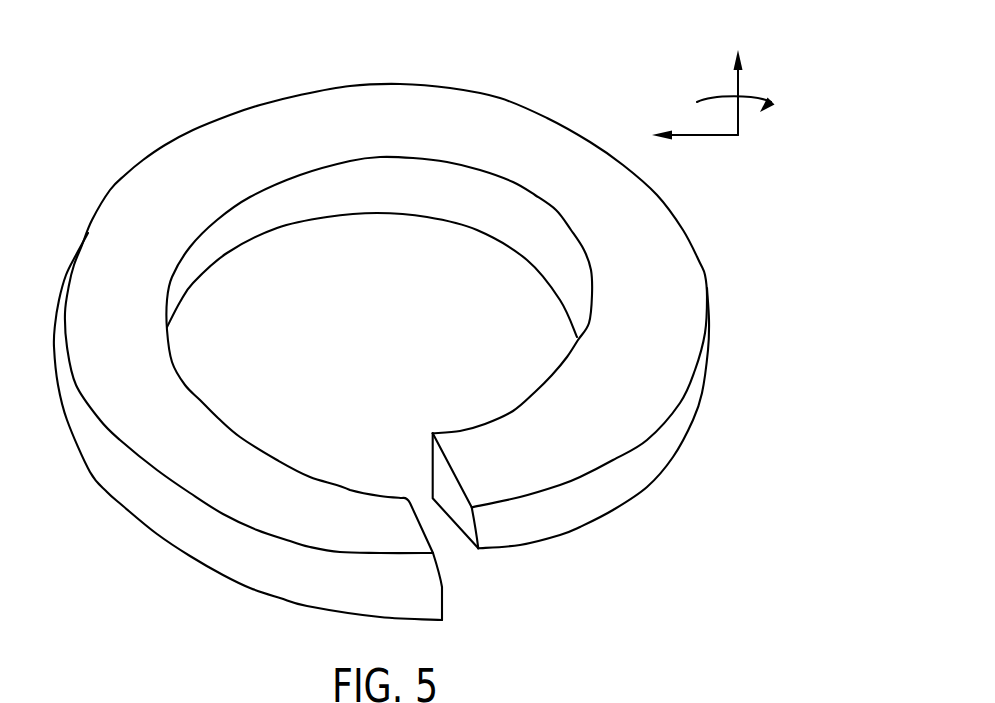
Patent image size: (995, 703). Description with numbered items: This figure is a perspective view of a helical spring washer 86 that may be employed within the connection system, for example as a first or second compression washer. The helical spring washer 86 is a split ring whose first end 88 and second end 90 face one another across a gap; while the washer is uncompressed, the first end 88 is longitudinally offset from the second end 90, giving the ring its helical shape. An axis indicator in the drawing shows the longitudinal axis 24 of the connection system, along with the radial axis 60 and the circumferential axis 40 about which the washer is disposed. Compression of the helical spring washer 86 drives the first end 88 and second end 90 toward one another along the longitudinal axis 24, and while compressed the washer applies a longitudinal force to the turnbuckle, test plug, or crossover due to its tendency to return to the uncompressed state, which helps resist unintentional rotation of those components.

The longitudinal axis 24 is at (739, 119).
The circumferential axis 40 is at (718, 84).
The radial axis 60 is at (700, 136).
The helical spring washer 86 is at (613, 593).
The first end 88 is at (442, 487).
The second end 90 is at (443, 588).